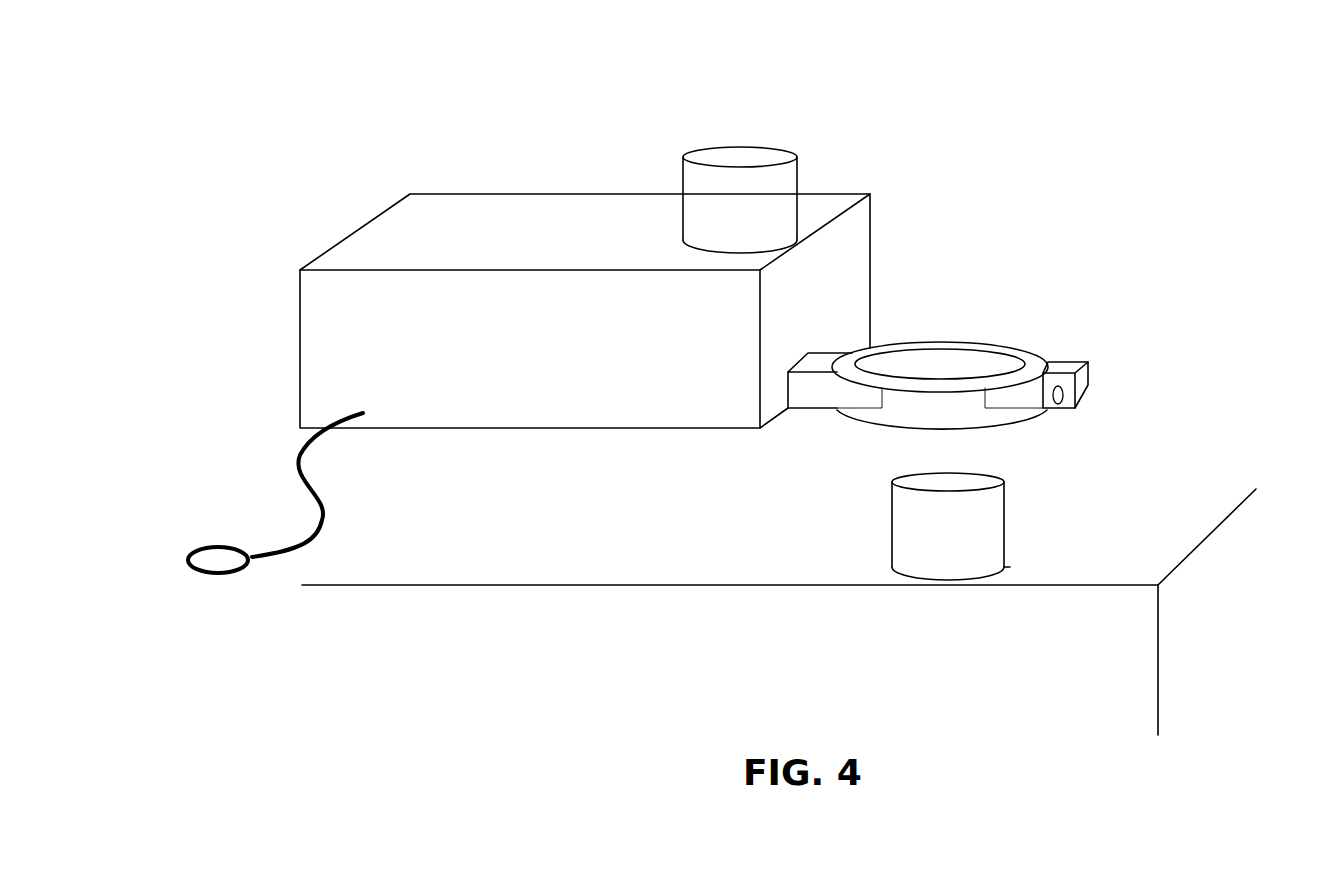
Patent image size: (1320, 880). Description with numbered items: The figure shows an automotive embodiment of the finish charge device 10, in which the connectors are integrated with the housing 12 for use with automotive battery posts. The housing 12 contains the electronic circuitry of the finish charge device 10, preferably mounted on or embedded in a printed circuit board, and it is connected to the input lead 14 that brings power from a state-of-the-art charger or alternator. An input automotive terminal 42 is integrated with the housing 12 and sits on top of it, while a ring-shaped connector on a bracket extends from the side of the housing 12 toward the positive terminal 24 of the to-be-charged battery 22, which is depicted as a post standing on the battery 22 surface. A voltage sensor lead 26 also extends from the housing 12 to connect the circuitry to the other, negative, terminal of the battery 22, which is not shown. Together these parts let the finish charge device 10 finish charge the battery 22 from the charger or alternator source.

The finish charge device 10 is at (777, 222).
The housing 12 is at (462, 217).
The input lead 14 is at (1045, 357).
The battery 22 is at (836, 668).
The positive terminal 24 is at (995, 533).
The voltage sensor lead 26 is at (320, 560).
The input automotive terminal 42 is at (690, 180).